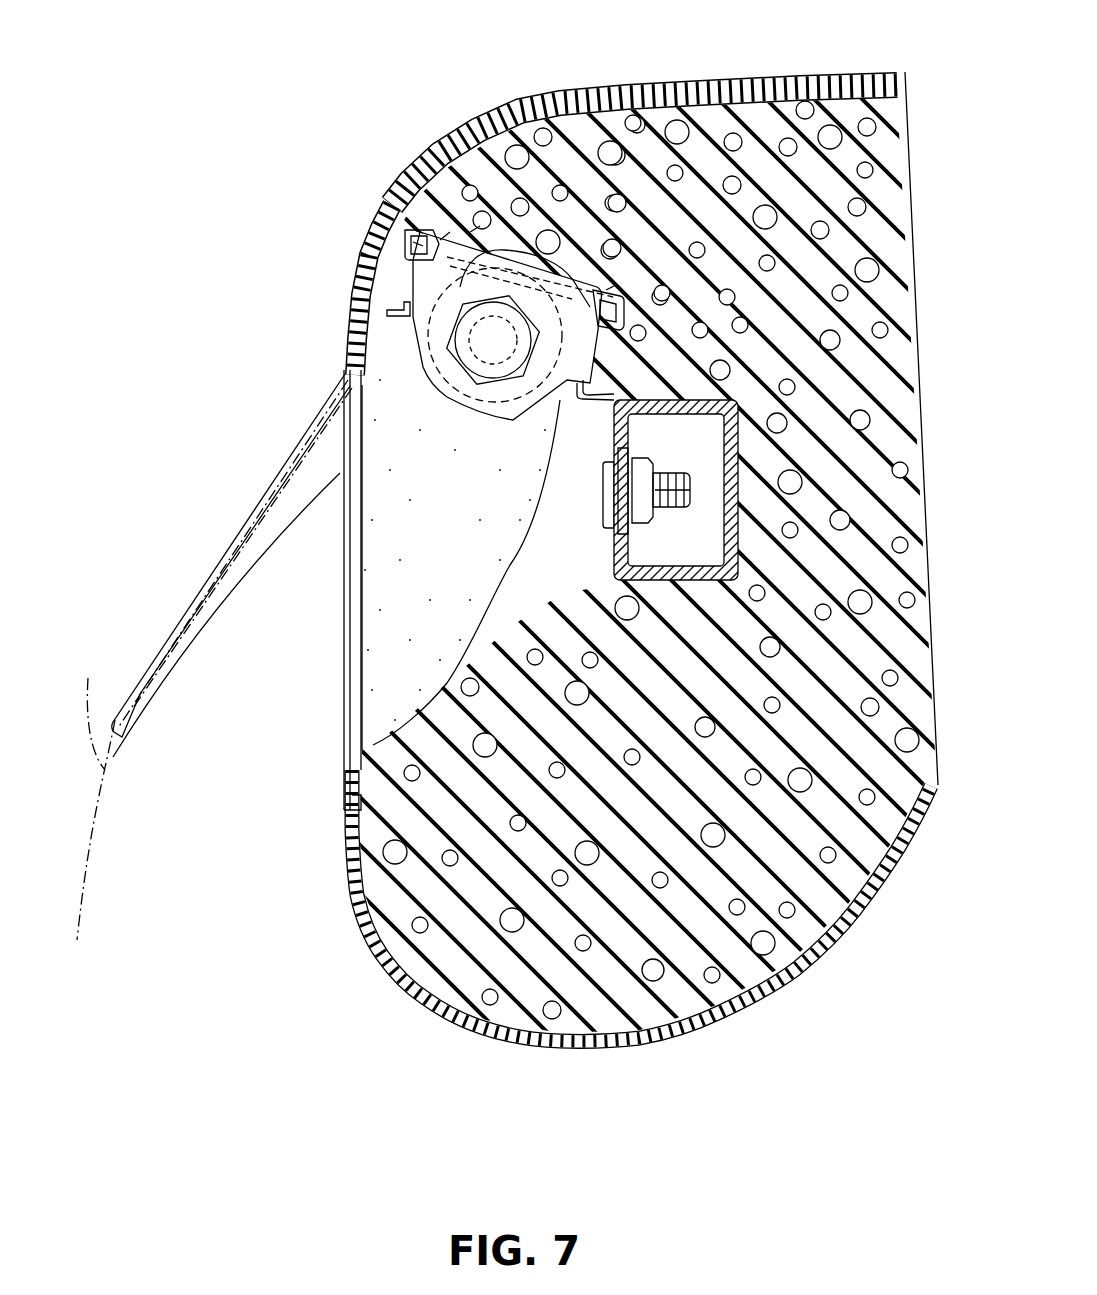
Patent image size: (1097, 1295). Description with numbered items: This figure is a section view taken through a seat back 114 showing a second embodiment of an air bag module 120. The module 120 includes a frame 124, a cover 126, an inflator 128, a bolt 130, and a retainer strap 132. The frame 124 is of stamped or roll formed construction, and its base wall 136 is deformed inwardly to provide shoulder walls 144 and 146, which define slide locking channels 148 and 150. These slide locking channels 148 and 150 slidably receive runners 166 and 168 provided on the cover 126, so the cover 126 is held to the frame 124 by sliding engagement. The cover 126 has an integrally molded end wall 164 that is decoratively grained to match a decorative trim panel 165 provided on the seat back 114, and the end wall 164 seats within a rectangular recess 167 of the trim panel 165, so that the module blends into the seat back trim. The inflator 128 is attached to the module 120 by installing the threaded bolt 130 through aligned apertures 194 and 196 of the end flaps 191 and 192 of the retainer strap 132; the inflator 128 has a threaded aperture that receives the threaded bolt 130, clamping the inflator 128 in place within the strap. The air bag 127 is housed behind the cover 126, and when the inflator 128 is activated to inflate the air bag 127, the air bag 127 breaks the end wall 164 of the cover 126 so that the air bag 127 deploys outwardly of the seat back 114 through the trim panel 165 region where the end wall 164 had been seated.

The seat back 114 is at (592, 85).
The module 120 is at (538, 529).
The frame 124 is at (456, 218).
The cover 126 is at (383, 364).
The air bag 127 is at (88, 794).
The inflator 128 is at (480, 350).
The bolt 130 is at (513, 368).
The retainer strap 132 is at (398, 280).
The base wall 136 is at (473, 225).
The shoulder wall 144 is at (398, 226).
The shoulder wall 146 is at (624, 322).
The slide locking channel 148 is at (415, 240).
The slide locking channel 150 is at (618, 282).
The end wall 164 is at (347, 664).
The decorative trim panel 165 is at (336, 297).
The runner 166 is at (420, 243).
The rectangular recess 167 is at (352, 800).
The runner 168 is at (620, 308).
The end flap 191 is at (387, 307).
The end flap 192 is at (580, 345).
The aperture 194 is at (455, 550).
The aperture 196 is at (466, 572).